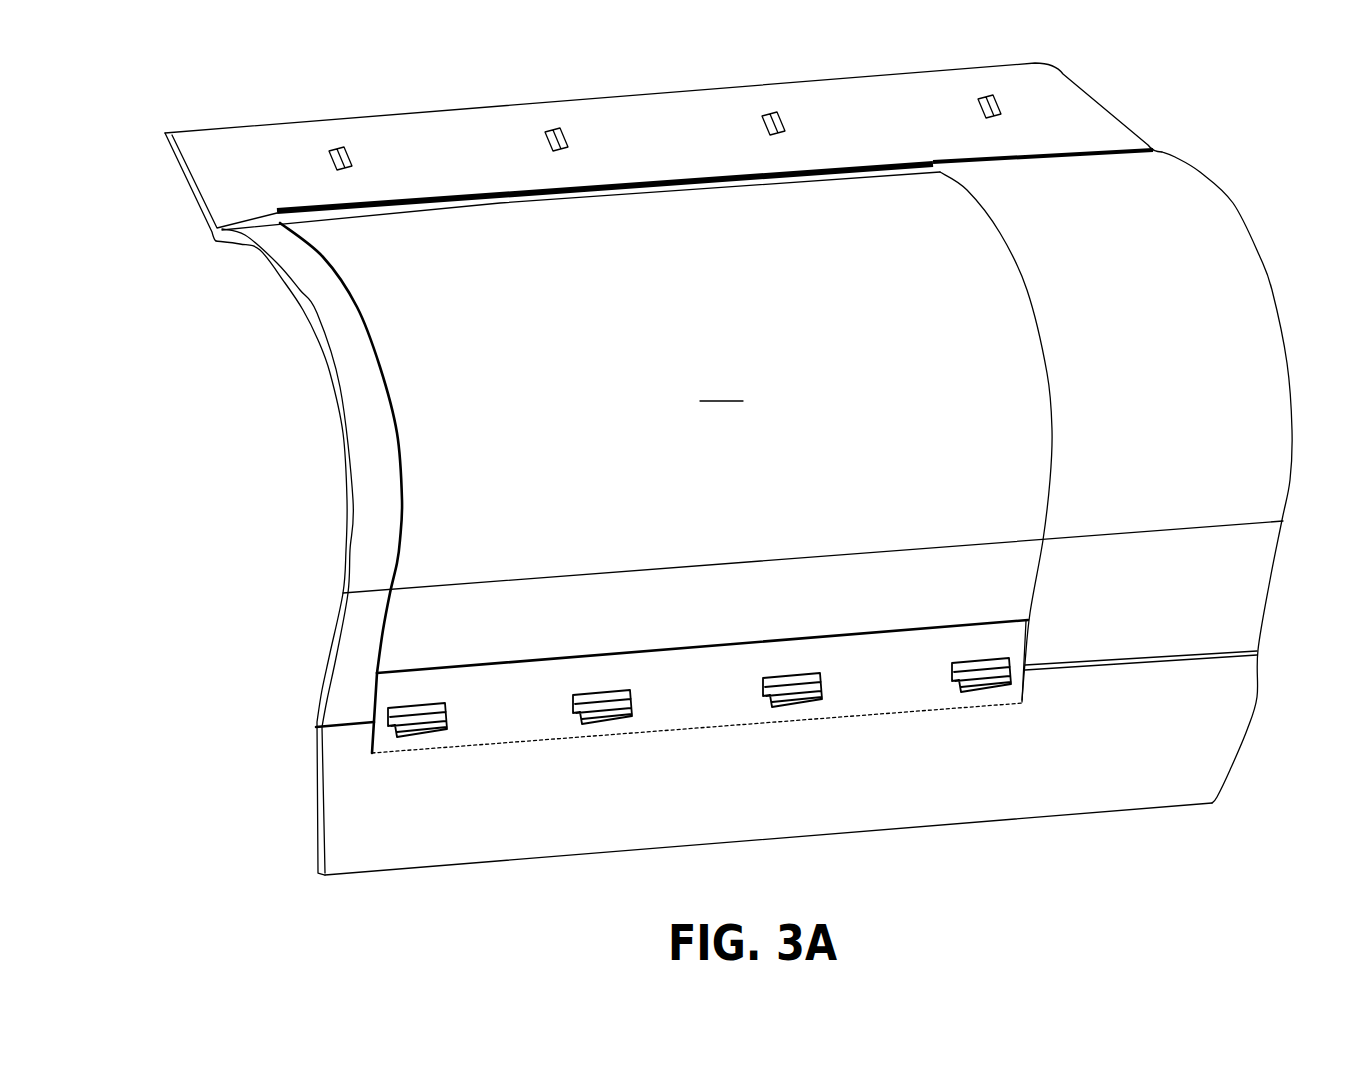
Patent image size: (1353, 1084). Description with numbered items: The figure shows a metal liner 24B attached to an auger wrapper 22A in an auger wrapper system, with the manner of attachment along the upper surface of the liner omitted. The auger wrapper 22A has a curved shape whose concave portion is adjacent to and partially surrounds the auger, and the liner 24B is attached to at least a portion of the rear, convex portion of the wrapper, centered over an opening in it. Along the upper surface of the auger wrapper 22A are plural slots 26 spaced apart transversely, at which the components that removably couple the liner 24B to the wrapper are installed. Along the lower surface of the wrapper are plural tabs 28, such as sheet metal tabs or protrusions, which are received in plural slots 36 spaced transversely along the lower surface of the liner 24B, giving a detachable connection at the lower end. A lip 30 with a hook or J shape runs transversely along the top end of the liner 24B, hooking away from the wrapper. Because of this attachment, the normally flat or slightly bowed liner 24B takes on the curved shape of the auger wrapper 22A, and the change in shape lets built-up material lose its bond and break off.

The auger wrapper 22A is at (210, 130).
The metal liner 24B is at (754, 513).
The slots 26 is at (321, 139).
The tabs 28 is at (413, 728).
The lip 30 is at (287, 216).
The slots 36 is at (452, 694).